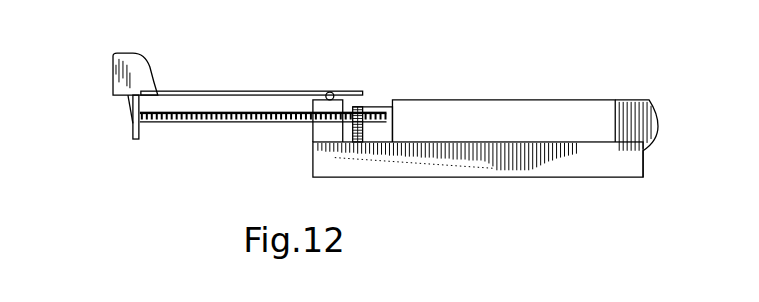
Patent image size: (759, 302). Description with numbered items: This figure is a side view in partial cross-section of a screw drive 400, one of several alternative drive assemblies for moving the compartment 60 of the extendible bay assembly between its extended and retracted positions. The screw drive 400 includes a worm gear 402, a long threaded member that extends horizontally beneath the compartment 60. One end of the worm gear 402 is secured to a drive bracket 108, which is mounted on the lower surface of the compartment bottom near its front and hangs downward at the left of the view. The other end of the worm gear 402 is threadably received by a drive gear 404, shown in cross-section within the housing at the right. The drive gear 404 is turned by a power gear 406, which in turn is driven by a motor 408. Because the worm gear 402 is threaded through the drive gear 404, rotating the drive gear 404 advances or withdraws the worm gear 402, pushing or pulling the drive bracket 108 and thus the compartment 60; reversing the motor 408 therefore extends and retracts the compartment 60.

The compartment 60 is at (212, 85).
The drive bracket 108 is at (127, 122).
The screw drive 400 is at (215, 124).
The worm gear 402 is at (173, 123).
The drive gear 404 is at (310, 176).
The power gear 406 is at (310, 173).
The motor 408 is at (378, 133).